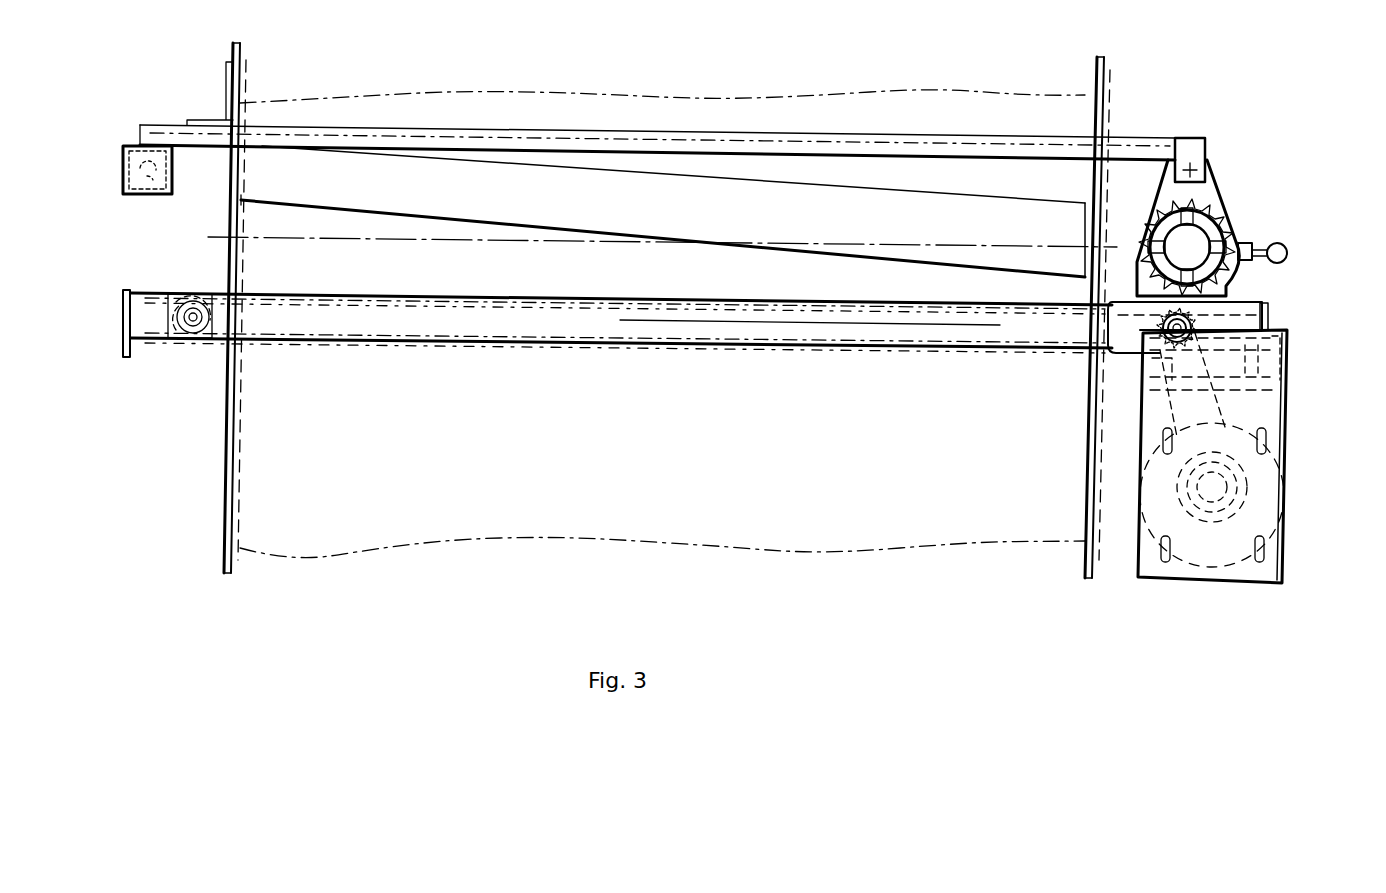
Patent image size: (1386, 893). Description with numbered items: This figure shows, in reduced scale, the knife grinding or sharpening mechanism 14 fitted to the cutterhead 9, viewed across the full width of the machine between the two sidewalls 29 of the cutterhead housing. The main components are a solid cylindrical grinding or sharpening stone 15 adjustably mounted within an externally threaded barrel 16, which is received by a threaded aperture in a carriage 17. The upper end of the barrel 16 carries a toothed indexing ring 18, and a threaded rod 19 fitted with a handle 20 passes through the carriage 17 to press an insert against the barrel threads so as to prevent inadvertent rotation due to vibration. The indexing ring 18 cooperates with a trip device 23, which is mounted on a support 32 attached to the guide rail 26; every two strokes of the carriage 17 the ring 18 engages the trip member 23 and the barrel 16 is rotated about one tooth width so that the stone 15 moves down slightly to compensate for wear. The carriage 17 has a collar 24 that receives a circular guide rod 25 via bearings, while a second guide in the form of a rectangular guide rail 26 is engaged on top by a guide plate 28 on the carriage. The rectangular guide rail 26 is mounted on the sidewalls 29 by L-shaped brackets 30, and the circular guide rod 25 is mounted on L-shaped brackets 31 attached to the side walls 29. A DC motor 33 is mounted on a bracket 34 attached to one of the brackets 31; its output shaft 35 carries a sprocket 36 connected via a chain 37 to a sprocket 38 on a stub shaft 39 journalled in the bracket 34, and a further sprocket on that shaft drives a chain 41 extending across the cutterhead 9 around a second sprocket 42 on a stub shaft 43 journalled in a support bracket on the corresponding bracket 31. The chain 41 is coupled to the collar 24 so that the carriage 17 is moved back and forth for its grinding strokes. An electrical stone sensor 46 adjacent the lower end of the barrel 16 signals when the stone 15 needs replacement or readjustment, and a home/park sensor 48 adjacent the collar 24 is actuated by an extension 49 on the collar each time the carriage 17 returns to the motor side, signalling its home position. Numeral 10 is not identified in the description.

The cutterhead 9 is at (618, 92).
The panel 10 is at (468, 178).
The knife grinding or sharpening mechanism 14 is at (1260, 207).
The grinding or sharpening stone 15 is at (1220, 228).
The barrel 16 is at (1215, 237).
The carriage 17 is at (1227, 292).
The toothed indexing ring 18 is at (1240, 240).
The threaded rod 19 is at (1262, 243).
The handle 20 is at (1290, 256).
The trip device 23 is at (150, 178).
The collar 24 is at (1272, 301).
The guide rod 25 is at (615, 320).
The guide rail 26 is at (208, 147).
The guide plate 28 is at (1195, 150).
The sidewalls 29 is at (225, 472).
The L-shaped brackets 30 is at (228, 95).
The L-shaped brackets 31 is at (127, 346).
The support 32 is at (135, 158).
The DC motor 33 is at (1258, 500).
The bracket 34 is at (1288, 462).
The output shaft 35 is at (1205, 503).
The sprocket 36 is at (1218, 500).
The chain 37 is at (1220, 430).
The sprocket 38 is at (1165, 338).
The stub shaft 39 is at (1282, 338).
The chain 41 is at (500, 340).
The second sprocket 42 is at (183, 335).
The stub shaft 43 is at (195, 300).
The electrical stone sensor 46 is at (1152, 294).
The home/park sensor 48 is at (1170, 397).
The extension 49 is at (1272, 378).